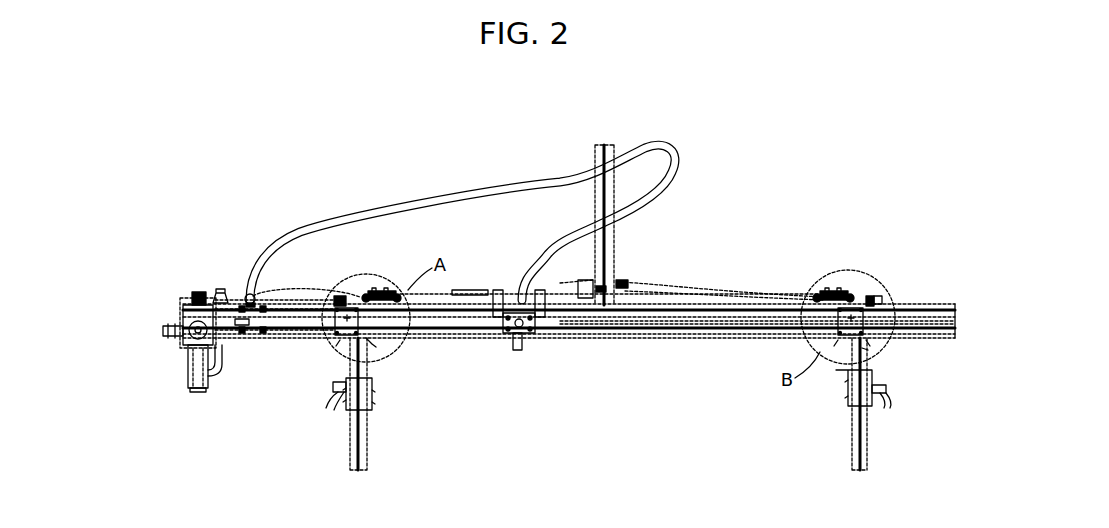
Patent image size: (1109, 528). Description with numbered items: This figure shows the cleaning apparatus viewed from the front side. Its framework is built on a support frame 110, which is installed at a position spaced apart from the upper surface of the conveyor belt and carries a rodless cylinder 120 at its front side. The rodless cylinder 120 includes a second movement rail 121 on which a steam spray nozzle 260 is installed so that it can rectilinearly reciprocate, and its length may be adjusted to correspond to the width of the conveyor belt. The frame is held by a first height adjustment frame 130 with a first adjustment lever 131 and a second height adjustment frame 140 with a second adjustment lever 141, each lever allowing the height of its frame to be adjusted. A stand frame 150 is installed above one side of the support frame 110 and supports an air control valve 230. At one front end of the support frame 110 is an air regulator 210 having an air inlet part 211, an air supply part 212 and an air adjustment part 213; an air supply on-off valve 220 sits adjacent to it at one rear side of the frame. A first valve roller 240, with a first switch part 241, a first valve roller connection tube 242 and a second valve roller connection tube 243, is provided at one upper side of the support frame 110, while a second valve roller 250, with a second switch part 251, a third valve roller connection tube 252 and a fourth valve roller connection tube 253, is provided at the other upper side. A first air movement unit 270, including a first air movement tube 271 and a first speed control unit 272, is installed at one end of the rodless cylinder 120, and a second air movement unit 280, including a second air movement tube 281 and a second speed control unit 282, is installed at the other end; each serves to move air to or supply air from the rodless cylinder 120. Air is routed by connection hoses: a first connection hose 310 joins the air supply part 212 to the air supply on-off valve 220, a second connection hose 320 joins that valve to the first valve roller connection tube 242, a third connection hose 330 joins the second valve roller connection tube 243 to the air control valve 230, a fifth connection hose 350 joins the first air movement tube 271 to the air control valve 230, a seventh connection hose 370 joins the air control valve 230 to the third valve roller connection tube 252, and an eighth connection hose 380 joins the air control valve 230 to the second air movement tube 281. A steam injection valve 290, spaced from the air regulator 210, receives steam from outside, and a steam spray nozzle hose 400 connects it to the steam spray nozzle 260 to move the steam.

The support frame 110 is at (318, 340).
The rodless cylinder 120 is at (598, 340).
The second movement rail 121 is at (700, 320).
The first height adjustment frame 130 is at (368, 440).
The first adjustment lever 131 is at (343, 392).
The second height adjustment frame 140 is at (868, 440).
The second adjustment lever 141 is at (886, 400).
The stand frame 150 is at (604, 145).
The air regulator 210 is at (192, 365).
The air inlet part 211 is at (163, 330).
The air supply part 212 is at (228, 348).
The air adjustment part 213 is at (200, 292).
The air supply on-off valve 220 is at (222, 280).
The air control valve 230 is at (618, 283).
The first valve roller 240 is at (342, 172).
The first switch part 241 is at (380, 292).
The first valve roller connection tube 242 is at (366, 296).
The second valve roller connection tube 243 is at (396, 290).
The second valve roller 250 is at (830, 228).
The second switch part 251 is at (823, 290).
The third valve roller connection tube 252 is at (817, 292).
The fourth valve roller connection tube 253 is at (850, 292).
The steam spray nozzle 260 is at (522, 340).
The first air movement unit 270 is at (357, 346).
The first air movement tube 271 is at (377, 340).
The first speed control unit 272 is at (318, 300).
The second air movement unit 280 is at (870, 242).
The second air movement tube 281 is at (870, 298).
The second speed control unit 282 is at (878, 298).
The steam injection valve 290 is at (264, 348).
The first connection hose 310 is at (217, 370).
The second connection hose 320 is at (280, 275).
The third connection hose 330 is at (467, 300).
The fifth connection hose 350 is at (478, 290).
The seventh connection hose 370 is at (662, 314).
The eighth connection hose 380 is at (668, 282).
The steam spray nozzle hose 400 is at (496, 180).